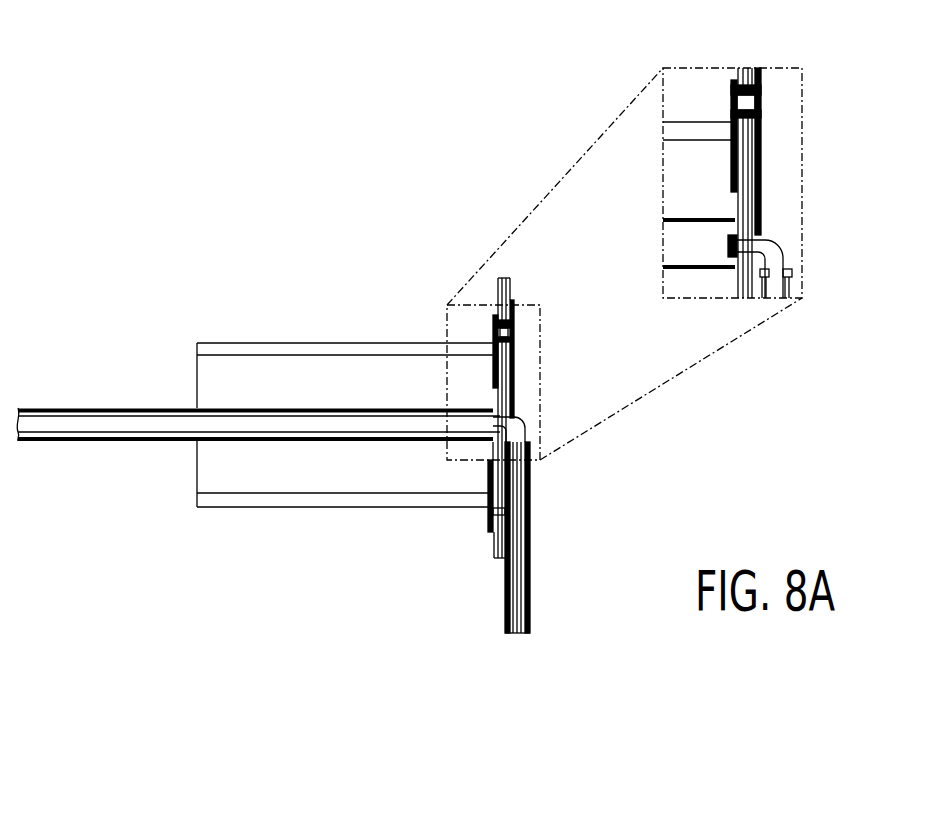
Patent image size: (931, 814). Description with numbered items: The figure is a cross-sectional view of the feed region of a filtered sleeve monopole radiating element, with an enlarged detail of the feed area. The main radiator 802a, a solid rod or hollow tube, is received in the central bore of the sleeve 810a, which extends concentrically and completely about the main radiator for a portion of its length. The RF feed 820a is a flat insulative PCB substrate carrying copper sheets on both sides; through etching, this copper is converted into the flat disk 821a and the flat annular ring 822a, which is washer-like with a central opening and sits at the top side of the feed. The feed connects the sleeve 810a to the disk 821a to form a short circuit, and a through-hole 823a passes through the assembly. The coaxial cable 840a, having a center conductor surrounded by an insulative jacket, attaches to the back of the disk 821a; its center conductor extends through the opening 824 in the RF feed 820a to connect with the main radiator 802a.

The filtered main radiator 802a is at (125, 408).
The sleeve 810a is at (307, 342).
The RF feed 820a is at (511, 290).
The disk 821a is at (514, 318).
The annular ring 822a is at (493, 322).
The through-hole 823a is at (512, 332).
The opening 824 is at (762, 230).
The coaxial cable 840a is at (531, 564).